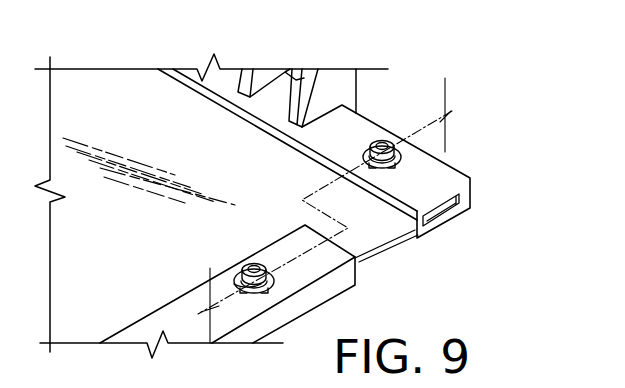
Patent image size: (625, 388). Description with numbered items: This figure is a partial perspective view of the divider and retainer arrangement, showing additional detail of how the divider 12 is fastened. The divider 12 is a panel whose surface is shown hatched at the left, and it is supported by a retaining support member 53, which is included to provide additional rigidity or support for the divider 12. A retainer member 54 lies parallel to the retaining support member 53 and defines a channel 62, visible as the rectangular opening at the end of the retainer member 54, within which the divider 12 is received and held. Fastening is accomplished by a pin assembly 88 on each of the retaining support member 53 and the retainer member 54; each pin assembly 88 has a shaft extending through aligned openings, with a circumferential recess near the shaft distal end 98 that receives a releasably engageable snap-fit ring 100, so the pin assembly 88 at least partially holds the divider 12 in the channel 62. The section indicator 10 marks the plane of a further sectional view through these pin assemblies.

The divider 12 is at (136, 148).
The retaining support member 53 is at (136, 312).
The retainer member 54 is at (459, 172).
The channel 62 is at (410, 219).
The pin assembly 88 is at (341, 161).
The shaft distal end 98 is at (382, 142).
The snap-fit ring 100 is at (368, 156).
The section line 10- 10 is at (292, 201).